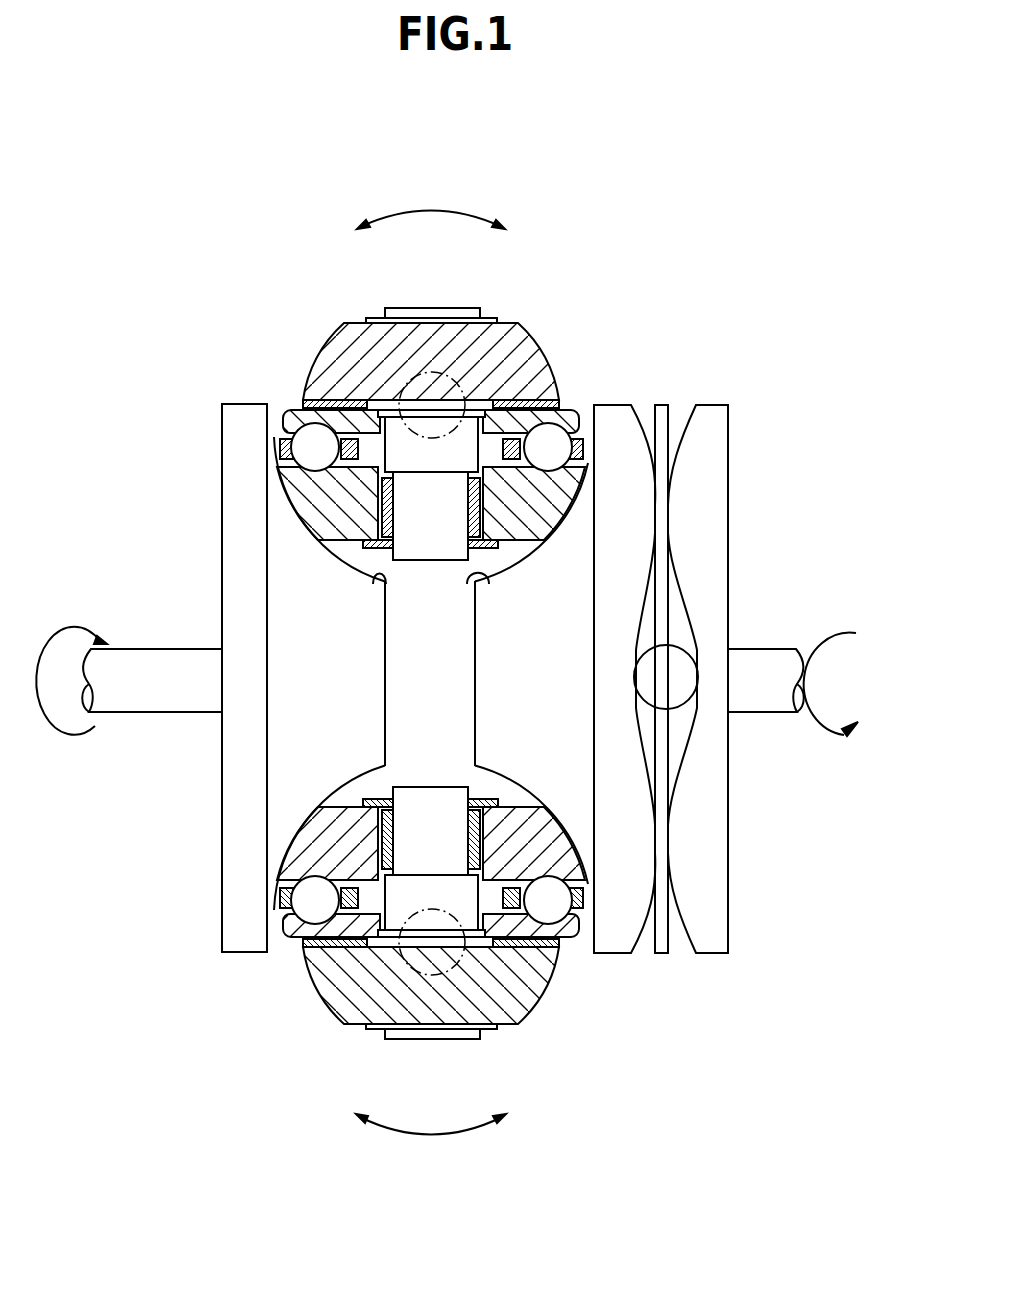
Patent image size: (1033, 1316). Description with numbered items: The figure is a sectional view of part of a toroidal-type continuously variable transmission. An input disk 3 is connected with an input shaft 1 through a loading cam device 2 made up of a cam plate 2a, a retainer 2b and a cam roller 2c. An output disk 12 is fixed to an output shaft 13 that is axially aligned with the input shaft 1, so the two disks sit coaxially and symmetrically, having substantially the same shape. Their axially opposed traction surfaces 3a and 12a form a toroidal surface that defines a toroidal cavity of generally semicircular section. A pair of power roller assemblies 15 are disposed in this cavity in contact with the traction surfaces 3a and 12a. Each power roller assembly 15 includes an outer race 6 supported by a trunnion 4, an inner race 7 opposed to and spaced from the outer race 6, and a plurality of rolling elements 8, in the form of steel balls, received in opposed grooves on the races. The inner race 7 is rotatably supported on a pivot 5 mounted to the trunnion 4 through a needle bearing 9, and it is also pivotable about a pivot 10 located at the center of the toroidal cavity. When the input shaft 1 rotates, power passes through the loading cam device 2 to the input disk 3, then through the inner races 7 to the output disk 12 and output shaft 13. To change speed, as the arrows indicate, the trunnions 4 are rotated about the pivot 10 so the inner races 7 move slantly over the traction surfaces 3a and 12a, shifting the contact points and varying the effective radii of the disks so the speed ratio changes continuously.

The input shaft 1 is at (782, 649).
The loading cam device 2 is at (727, 649).
The cam plate 2a is at (713, 404).
The retainer 2b is at (664, 404).
The cam roller 2c is at (680, 643).
The input disk 3 is at (620, 404).
The traction surface 3a is at (467, 573).
The trunnion 4 is at (524, 327).
The pivot 5 is at (466, 308).
The outer race 6 is at (560, 402).
The inner race 7 is at (588, 420).
The rolling elements 8 is at (308, 438).
The needle bearing 9 is at (370, 476).
The pivot 10 is at (415, 373).
The output disk 12 is at (232, 404).
The traction surface 12a is at (380, 573).
The output shaft 13 is at (155, 648).
The power roller assembly 15 is at (581, 336).